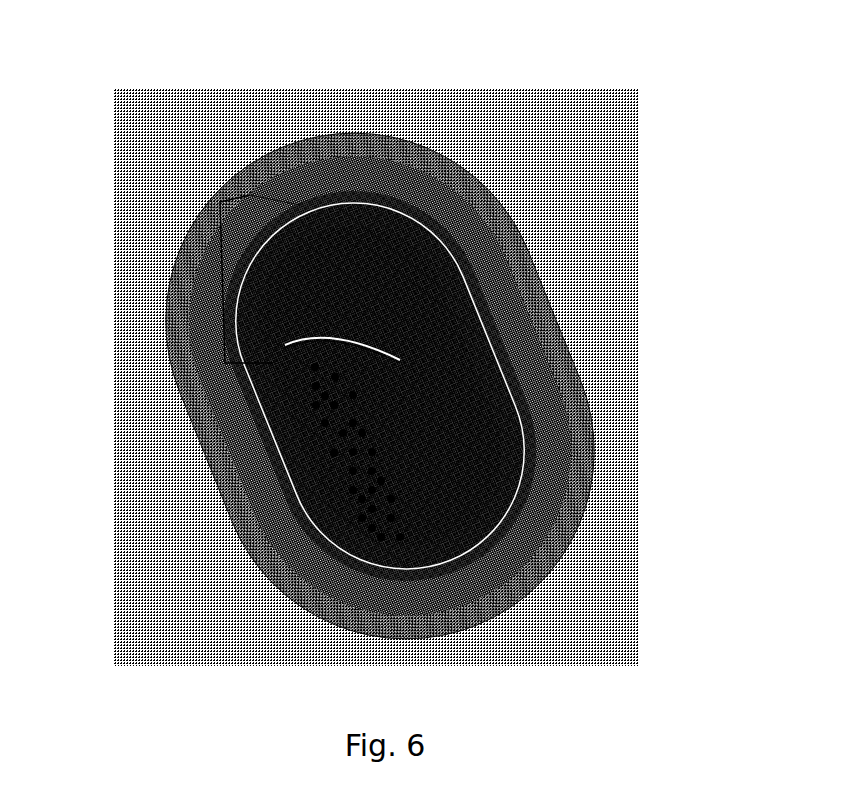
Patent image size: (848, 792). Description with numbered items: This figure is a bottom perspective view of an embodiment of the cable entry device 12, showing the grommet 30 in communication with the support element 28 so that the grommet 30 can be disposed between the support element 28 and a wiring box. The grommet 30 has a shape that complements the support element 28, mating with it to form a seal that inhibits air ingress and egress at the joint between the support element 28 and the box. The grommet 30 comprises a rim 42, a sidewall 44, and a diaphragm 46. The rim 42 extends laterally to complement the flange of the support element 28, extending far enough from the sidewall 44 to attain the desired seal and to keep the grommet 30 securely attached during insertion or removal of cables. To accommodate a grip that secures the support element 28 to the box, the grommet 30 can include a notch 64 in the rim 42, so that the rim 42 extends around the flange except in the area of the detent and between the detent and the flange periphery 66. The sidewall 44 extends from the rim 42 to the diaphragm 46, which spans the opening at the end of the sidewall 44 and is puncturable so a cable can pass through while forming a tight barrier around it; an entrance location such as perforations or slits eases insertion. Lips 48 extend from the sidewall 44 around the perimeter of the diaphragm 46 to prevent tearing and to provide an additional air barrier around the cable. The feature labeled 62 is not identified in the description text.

The cable entry device 12 is at (615, 220).
The support element 28 is at (502, 192).
The grommet 30 is at (222, 287).
The rim 42 is at (422, 177).
The sidewall 44 is at (312, 237).
The diaphragm 46 is at (343, 465).
The lip 48 is at (362, 353).
The aperture 62 is at (383, 540).
The notch 64 is at (178, 325).
The flange periphery 66 is at (565, 343).